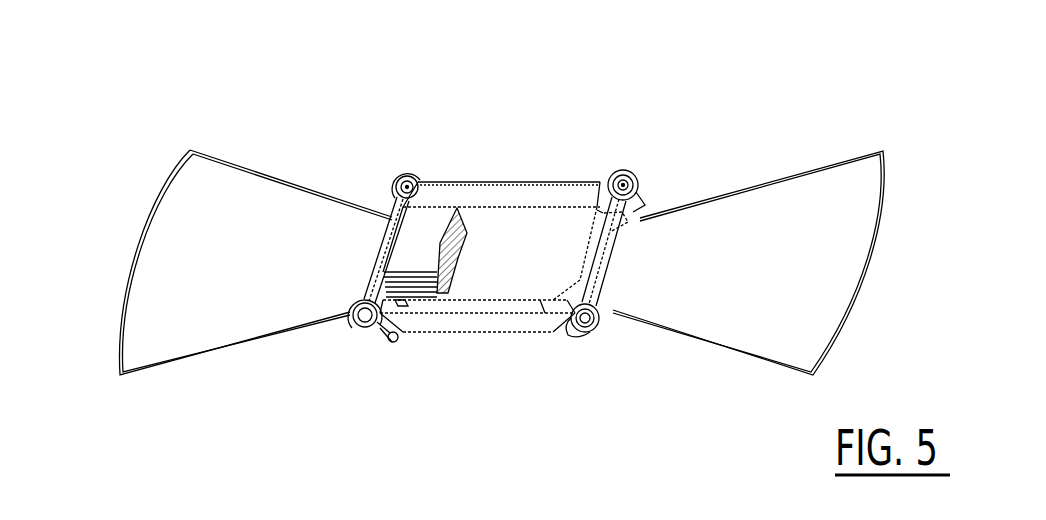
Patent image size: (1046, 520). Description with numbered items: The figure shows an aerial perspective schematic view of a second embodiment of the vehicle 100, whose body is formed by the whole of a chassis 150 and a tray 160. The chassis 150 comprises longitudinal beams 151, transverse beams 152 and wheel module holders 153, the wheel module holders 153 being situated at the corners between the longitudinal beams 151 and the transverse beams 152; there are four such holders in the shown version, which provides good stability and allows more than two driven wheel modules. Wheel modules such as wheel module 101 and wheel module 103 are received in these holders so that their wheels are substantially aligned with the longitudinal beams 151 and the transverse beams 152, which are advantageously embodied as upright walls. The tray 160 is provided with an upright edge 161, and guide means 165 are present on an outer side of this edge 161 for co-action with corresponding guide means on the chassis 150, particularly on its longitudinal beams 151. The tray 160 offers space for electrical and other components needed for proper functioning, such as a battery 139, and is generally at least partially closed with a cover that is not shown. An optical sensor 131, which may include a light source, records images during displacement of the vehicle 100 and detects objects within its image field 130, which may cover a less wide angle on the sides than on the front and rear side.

The vehicle 100 is at (514, 262).
The wheel module 101 is at (362, 322).
The wheel module 103 is at (628, 178).
The image field 130 is at (845, 272).
The optical sensor 131 is at (618, 250).
The battery 139 is at (423, 240).
The chassis 150 is at (496, 368).
The longitudinal beam 151 is at (542, 318).
The transverse beam 152 is at (620, 230).
The wheel module holder 153 is at (404, 173).
The tray 160 is at (560, 217).
The upright edge 161 is at (515, 197).
The guide means 165 is at (412, 305).